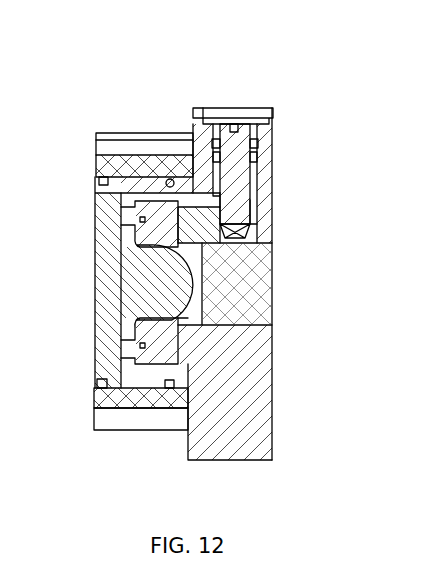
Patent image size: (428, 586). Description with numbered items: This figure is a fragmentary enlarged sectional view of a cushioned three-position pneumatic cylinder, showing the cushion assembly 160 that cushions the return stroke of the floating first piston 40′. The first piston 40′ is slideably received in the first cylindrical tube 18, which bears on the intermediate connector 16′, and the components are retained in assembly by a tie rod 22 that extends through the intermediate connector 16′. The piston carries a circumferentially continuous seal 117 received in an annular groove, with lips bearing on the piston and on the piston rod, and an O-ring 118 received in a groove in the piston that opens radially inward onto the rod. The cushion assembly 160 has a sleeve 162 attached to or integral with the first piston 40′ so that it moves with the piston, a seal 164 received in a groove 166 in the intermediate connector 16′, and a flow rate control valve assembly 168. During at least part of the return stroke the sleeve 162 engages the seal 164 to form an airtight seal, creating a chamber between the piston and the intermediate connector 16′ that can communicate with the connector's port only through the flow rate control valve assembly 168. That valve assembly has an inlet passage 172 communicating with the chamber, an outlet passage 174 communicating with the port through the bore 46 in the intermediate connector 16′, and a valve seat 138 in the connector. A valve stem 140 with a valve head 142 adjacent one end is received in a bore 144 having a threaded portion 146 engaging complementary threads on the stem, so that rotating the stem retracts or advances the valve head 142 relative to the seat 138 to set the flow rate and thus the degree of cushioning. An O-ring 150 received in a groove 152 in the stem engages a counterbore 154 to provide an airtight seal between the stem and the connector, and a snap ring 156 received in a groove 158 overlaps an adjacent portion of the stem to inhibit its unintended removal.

The cushion assembly 160 is at (72, 61).
The counterbore 154 is at (212, 150).
The bore 144 is at (233, 127).
The flow rate control valve assembly 168 is at (247, 73).
The snap ring 156 is at (247, 117).
The groove 158 is at (273, 118).
The O-ring 150 is at (257, 143).
The valve stem 140 is at (240, 180).
The threaded portion 146 is at (257, 186).
The valve head 142 is at (256, 220).
The valve seat 138 is at (222, 240).
The outlet passage 174 is at (247, 238).
The bore 46 is at (242, 292).
The sleeve 162 is at (180, 322).
The groove 166 is at (192, 363).
The intermediate connector 16′ is at (217, 461).
The O-ring 118 is at (170, 388).
The tie rod 22 is at (123, 413).
The first cylindrical tube 18 is at (105, 397).
The seal 117 is at (95, 382).
The seal 164 is at (125, 330).
The first piston 40′ is at (100, 275).
The inlet passage 172 is at (190, 198).
The groove 152 is at (213, 156).